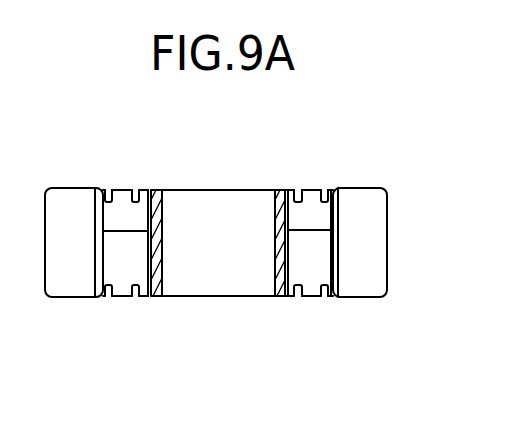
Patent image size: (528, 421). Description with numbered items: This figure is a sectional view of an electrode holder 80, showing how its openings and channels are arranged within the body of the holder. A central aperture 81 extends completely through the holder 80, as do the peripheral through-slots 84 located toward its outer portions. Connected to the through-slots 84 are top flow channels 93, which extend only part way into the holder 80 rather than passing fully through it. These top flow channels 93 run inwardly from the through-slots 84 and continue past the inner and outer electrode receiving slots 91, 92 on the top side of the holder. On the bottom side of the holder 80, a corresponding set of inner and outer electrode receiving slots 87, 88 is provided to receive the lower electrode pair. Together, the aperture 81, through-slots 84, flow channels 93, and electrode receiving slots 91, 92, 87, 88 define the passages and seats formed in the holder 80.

The holder 80 is at (265, 235).
The central aperture 81 is at (220, 203).
The peripheral through-slots 84 is at (375, 240).
The inner electrode receiving slot 87 is at (128, 236).
The outer electrode receiving slot 88 is at (361, 267).
The inner electrode receiving slot 91 is at (136, 188).
The outer electrode receiving slot 92 is at (110, 188).
The top flow channels 93 is at (317, 215).